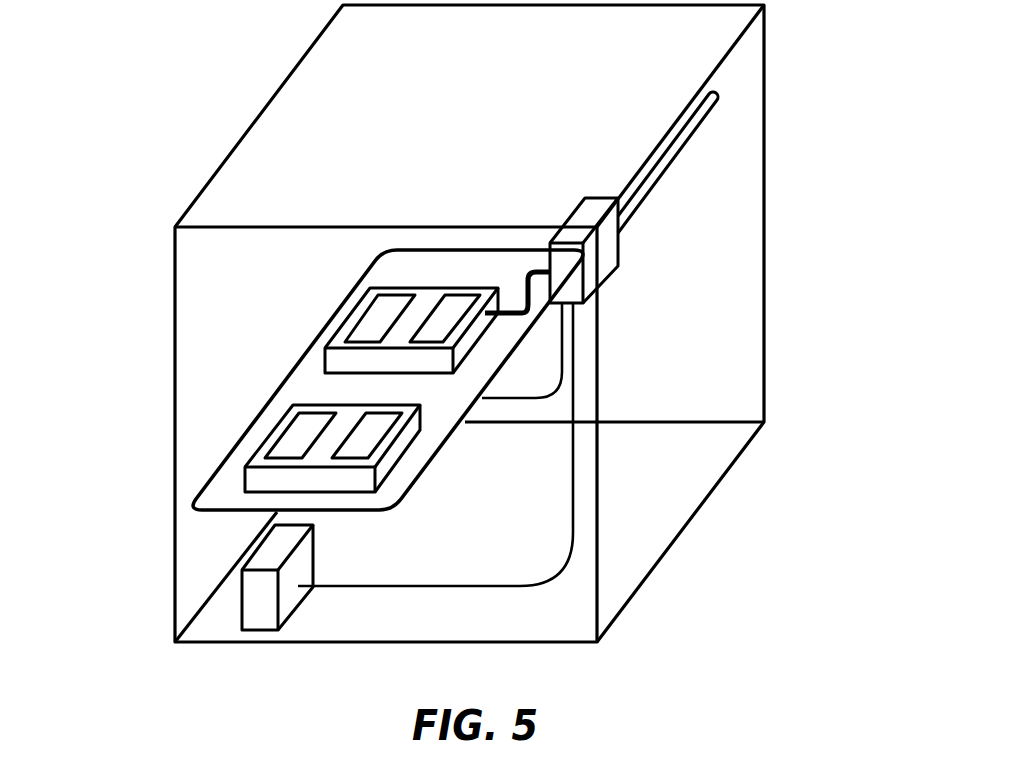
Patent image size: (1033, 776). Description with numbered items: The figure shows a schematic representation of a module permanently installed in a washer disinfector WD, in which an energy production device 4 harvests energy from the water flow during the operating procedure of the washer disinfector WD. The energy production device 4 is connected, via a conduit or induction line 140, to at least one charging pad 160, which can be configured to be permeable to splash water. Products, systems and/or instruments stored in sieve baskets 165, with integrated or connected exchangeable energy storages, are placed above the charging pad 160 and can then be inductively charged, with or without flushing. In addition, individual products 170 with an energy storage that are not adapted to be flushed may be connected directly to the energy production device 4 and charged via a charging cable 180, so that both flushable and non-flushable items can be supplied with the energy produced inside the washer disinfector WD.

The washer disinfector WD is at (788, 167).
The energy production device 4 is at (608, 255).
The induction line 140 is at (562, 372).
The charging pad 160 is at (268, 377).
The sieve baskets 165 is at (343, 412).
The individual products 170 is at (252, 600).
The charging cable 180 is at (352, 587).